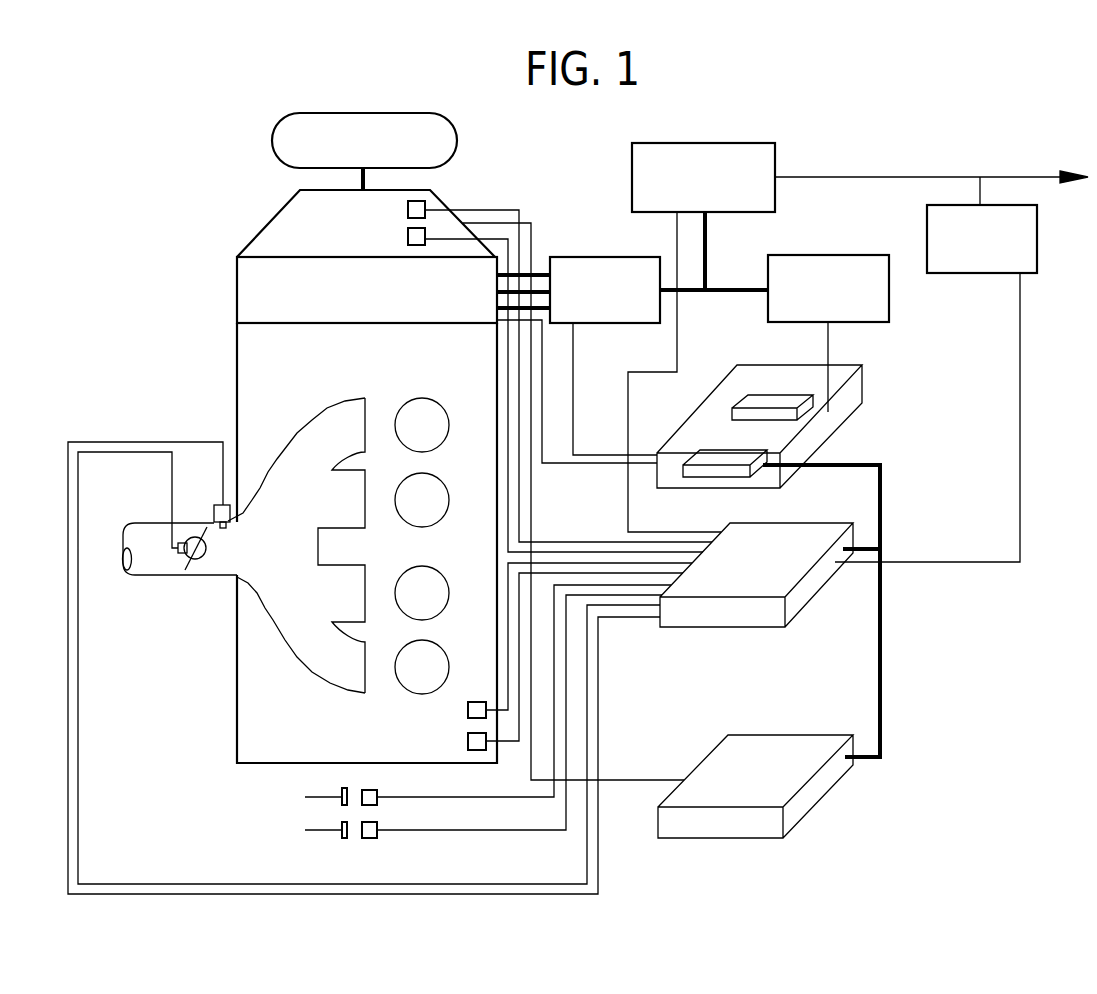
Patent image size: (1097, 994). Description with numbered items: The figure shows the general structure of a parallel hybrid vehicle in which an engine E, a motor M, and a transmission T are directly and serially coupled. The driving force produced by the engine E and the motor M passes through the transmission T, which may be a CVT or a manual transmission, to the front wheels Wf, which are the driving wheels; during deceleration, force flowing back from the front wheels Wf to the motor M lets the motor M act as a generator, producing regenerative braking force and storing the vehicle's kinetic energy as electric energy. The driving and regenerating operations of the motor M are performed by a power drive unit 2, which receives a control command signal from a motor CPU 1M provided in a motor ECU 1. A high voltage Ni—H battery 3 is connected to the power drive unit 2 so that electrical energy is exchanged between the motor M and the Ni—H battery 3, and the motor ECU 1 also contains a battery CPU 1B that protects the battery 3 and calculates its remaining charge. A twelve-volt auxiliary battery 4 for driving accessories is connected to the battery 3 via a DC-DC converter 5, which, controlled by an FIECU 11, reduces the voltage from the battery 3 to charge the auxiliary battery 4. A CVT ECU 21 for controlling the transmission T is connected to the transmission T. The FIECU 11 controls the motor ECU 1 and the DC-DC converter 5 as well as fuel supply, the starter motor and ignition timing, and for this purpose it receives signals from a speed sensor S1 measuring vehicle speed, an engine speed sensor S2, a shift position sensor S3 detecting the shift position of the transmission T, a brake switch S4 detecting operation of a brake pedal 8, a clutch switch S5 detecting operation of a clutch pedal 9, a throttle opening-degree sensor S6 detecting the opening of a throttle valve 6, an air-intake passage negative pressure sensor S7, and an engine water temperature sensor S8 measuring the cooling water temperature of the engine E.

The motor ECU 1 is at (793, 429).
The battery CPU 1B is at (797, 402).
The motor CPU 1M is at (765, 442).
The power drive unit 2 is at (605, 257).
The Ni—H battery 3 is at (831, 255).
The auxiliary battery 4 is at (1037, 238).
The DC-DC converter 5 is at (776, 160).
The throttle valve 6 is at (208, 560).
The brake pedal 8 is at (338, 783).
The clutch pedal 9 is at (342, 838).
The FIECU 11 is at (822, 578).
The CVT ECU 21 is at (825, 778).
The speed sensor S1 is at (418, 201).
The engine speed sensor S2 is at (468, 741).
The shift position sensor S3 is at (418, 246).
The brake switch S4 is at (354, 785).
The clutch switch S5 is at (368, 840).
The throttle opening-degree sensor S6 is at (182, 551).
The air-intake passage negative pressure sensor S7 is at (214, 515).
The engine water temperature sensor S8 is at (468, 710).
The transmission T is at (278, 226).
The motor M is at (247, 282).
The engine E is at (247, 340).
The front wheels Wf is at (457, 143).